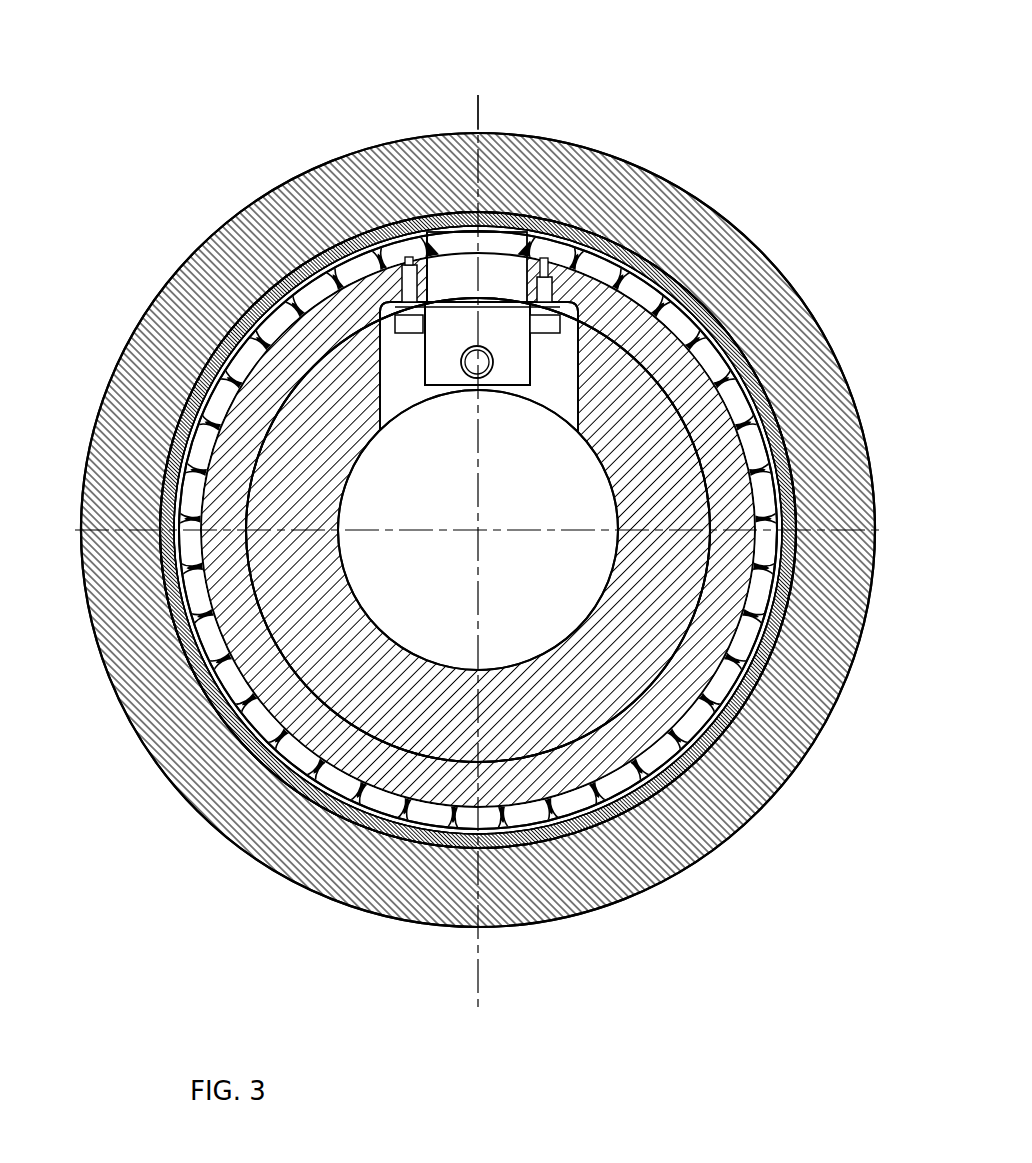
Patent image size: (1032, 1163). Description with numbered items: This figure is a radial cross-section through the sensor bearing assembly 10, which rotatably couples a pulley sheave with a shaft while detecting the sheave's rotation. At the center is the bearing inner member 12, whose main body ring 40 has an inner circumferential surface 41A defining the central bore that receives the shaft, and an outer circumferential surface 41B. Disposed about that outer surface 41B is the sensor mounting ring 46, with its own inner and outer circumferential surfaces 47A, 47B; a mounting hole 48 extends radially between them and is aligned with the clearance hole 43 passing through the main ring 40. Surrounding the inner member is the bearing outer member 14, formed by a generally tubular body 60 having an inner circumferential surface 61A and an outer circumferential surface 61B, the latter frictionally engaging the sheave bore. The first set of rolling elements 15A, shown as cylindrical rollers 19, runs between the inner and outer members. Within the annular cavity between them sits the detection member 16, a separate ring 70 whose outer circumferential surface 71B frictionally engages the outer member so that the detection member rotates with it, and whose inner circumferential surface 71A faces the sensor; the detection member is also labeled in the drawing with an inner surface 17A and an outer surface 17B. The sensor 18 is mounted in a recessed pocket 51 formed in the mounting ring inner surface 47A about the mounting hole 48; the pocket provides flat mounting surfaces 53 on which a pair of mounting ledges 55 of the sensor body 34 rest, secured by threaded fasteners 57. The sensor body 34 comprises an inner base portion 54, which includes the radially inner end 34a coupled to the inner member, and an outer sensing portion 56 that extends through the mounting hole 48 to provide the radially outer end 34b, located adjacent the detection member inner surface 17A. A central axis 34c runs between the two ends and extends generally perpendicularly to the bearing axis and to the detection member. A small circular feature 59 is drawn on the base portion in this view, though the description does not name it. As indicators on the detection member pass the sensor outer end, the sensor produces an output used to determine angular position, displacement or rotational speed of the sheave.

The sensor bearing assembly 10 is at (287, 68).
The bearing inner member 12 is at (367, 512).
The bearing outer member 14 is at (240, 170).
The first set of rolling elements 15A is at (252, 322).
The detection member 16 is at (603, 232).
The inner surface of the detection member 17A is at (606, 256).
The outer race outer surface 17B is at (623, 207).
The sensor 18 is at (505, 394).
The cylindrical rollers 19 is at (616, 264).
The sensor body 34 is at (440, 378).
The radially inner end 34a is at (462, 384).
The radially outer end 34b is at (507, 247).
The central axis 34c is at (480, 110).
The main body ring 40 is at (342, 608).
The inner circumferential surface 41A is at (405, 648).
The outer circumferential surface 41B is at (405, 753).
The clearance hole 43 is at (395, 378).
The sensor mounting ring 46 is at (703, 602).
The inner circumferential surface 47A is at (255, 602).
The outer circumferential surface 47B is at (176, 641).
The mounting hole 48 is at (432, 263).
The recessed pocket 51 is at (567, 312).
The flat mounting surfaces 53 is at (403, 302).
The inner base portion 54 is at (510, 372).
The mounting ledges 55 is at (412, 310).
The outer sensing portion 56 is at (547, 215).
The threaded fasteners 57 is at (418, 327).
The bore 59 is at (470, 353).
The tubular body 60 is at (772, 777).
The inner circumferential surface 61A is at (688, 768).
The outer circumferential surface 61B is at (672, 888).
The ring 70 is at (744, 350).
The inner circumferential surface 71A is at (802, 452).
The outer circumferential surface 71B is at (795, 411).